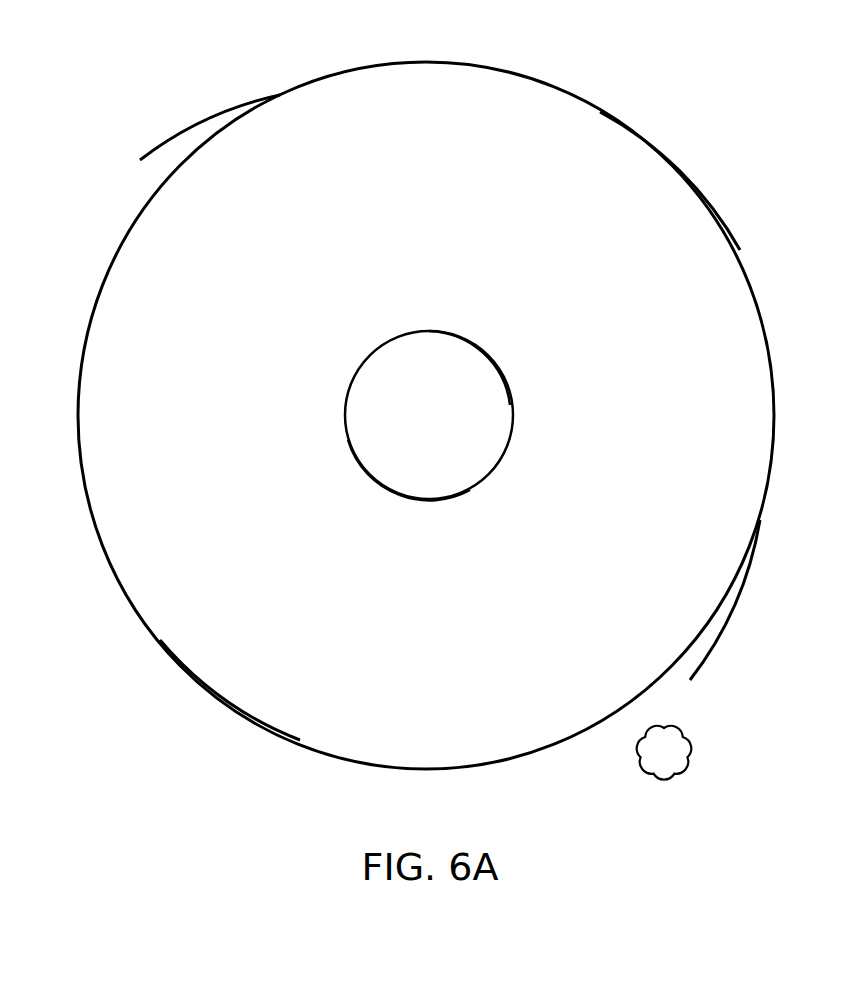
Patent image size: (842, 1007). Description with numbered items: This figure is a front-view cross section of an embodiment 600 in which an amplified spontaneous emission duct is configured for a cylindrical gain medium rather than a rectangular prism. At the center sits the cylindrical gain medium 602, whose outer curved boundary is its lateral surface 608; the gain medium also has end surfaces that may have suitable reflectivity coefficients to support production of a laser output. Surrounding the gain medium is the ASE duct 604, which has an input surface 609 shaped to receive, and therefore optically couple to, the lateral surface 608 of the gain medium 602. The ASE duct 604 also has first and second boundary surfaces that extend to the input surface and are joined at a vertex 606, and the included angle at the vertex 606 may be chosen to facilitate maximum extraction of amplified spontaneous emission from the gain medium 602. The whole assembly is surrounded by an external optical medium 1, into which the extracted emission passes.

The embodiment 600 is at (455, 825).
The cylindrical gain medium 602 is at (403, 428).
The ASE duct 604 is at (668, 182).
The vertex 606 is at (227, 705).
The lateral surface 608 is at (498, 381).
The input surface 609 is at (433, 502).
The external optical medium 1 is at (657, 766).